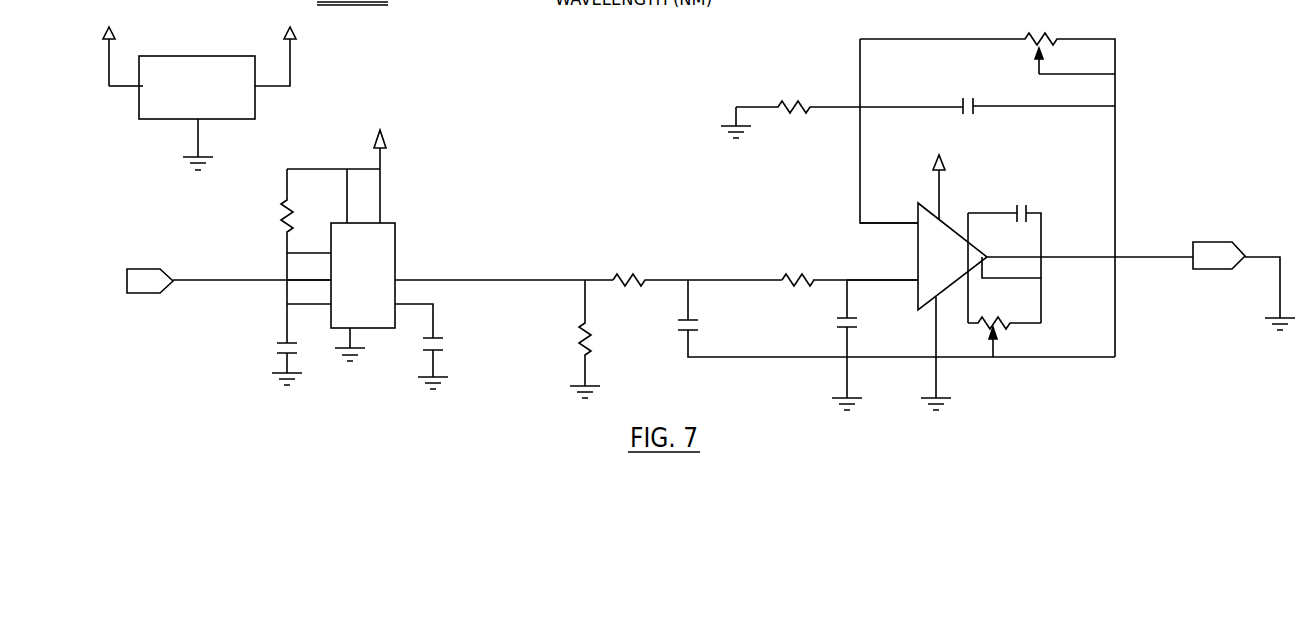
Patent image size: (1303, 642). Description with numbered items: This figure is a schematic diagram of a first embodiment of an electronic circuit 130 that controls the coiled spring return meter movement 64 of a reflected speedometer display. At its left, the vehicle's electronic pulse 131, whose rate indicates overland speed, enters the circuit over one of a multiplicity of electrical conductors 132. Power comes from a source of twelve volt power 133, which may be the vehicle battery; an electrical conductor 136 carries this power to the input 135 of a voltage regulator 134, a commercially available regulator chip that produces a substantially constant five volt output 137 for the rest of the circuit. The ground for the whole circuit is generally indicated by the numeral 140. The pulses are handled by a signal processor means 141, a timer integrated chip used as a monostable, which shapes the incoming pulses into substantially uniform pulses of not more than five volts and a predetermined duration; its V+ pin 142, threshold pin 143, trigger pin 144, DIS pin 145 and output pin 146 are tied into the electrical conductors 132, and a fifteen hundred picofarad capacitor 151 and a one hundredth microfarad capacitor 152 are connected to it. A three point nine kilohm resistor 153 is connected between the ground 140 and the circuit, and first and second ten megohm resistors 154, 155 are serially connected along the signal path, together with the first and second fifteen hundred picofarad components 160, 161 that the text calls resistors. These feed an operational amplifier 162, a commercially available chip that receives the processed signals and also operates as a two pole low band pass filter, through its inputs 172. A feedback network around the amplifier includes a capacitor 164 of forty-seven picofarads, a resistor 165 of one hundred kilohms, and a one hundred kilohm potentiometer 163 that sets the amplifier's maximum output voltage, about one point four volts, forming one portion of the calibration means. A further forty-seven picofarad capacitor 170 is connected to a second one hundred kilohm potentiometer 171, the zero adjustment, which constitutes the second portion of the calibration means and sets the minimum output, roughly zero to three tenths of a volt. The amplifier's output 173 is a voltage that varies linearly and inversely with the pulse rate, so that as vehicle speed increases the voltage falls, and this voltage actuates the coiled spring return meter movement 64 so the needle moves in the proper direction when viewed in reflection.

The coiled spring return meter movement 64 is at (1234, 250).
The electronic circuit 130 is at (565, 199).
The electronic pulse 131 is at (150, 276).
The electrical conductors 132 is at (187, 279).
The source of 12 volt power 133 is at (115, 33).
The voltage regulator 134 is at (217, 63).
The input 135 is at (140, 87).
The electrical conductor 136 is at (118, 87).
The 5 volt output 137 is at (285, 87).
The ground 140 is at (198, 173).
The signal processor means 141 is at (382, 254).
The V+ pin 142 is at (382, 222).
The threshold pin 143 is at (328, 252).
The trigger pin 144 is at (333, 278).
The DIS pin 145 is at (331, 308).
The output pin 146 is at (397, 278).
The 1500 pF capacitor 151 is at (277, 348).
The 0.01 microfarad capacitor 152 is at (438, 350).
The 3.9K ohm resistor 153 is at (594, 333).
The first resistor 154 is at (630, 272).
The second resistor 155 is at (811, 270).
The first resistor 160 is at (699, 328).
The second resistor 161 is at (838, 324).
The operational amplifier 162 is at (945, 246).
The 100K ohm potentiometer 163 is at (1042, 37).
The capacitor 164 is at (975, 101).
The resistor 165 is at (795, 99).
The 47 pF capacitor 170 is at (1028, 210).
The second 100K ohm potentiometer 171 is at (988, 330).
The inputs 172 is at (916, 272).
The output 173 is at (986, 256).